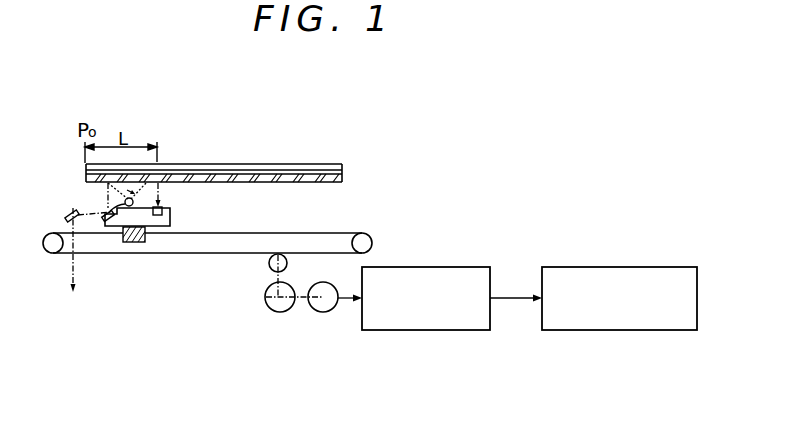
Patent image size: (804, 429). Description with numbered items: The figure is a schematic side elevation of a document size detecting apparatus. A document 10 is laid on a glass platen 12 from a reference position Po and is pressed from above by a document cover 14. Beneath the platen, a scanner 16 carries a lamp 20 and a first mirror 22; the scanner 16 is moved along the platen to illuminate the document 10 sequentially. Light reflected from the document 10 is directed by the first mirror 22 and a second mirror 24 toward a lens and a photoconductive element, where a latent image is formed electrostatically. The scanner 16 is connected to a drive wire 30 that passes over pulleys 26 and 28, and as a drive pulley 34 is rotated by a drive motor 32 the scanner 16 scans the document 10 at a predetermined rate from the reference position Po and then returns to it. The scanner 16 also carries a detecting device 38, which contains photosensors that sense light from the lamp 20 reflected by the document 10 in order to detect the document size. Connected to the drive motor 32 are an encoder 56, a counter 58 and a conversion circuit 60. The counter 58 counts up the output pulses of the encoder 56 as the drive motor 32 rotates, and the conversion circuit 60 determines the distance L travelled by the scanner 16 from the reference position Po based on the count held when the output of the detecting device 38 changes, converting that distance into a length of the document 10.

The document 10 is at (207, 173).
The glass platen 12 is at (247, 175).
The document cover 14 is at (294, 172).
The scanner 16 is at (162, 226).
The lamp 20 is at (133, 205).
The first mirror 22 is at (104, 227).
The second mirror 24 is at (68, 214).
The pulley 26 is at (48, 250).
The pulley 28 is at (371, 239).
The drive wire 30 is at (292, 234).
The drive motor 32 is at (266, 295).
The drive pulley 34 is at (269, 262).
The detecting device 38 is at (164, 207).
The encoder 56 is at (320, 312).
The counter 58 is at (422, 330).
The conversion circuit 60 is at (603, 330).